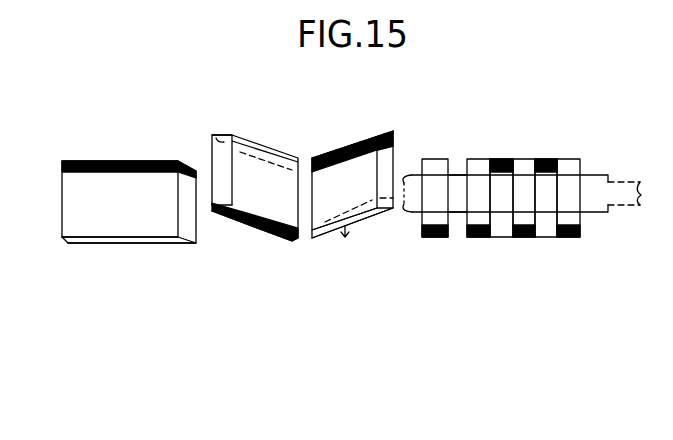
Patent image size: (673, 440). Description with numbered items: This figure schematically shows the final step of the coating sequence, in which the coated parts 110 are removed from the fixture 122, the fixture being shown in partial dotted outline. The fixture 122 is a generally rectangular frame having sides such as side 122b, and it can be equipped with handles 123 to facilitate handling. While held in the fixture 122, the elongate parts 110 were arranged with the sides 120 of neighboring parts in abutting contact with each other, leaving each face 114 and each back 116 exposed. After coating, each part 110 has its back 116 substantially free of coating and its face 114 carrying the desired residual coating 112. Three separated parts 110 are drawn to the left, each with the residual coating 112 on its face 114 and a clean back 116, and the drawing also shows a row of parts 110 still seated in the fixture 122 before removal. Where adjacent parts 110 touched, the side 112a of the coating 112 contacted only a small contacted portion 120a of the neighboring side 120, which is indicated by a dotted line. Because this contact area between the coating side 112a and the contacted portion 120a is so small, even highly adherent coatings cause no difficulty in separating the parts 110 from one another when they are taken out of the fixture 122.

The part 110 is at (168, 148).
The residual coating 112 is at (124, 160).
The side of coating 112a is at (388, 128).
The face 114 is at (128, 170).
The back 116 is at (152, 242).
The side 120 is at (115, 215).
The contacted portion 120a is at (232, 133).
The fixture 122 is at (618, 148).
The side 122b is at (479, 155).
The handle 123 is at (624, 203).